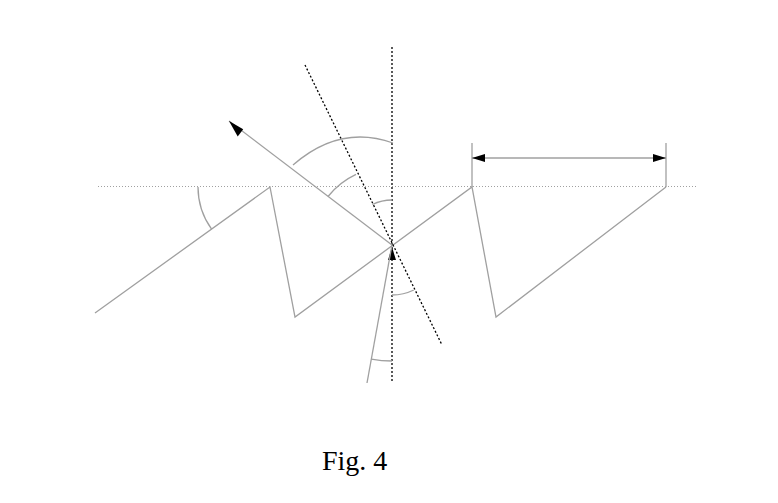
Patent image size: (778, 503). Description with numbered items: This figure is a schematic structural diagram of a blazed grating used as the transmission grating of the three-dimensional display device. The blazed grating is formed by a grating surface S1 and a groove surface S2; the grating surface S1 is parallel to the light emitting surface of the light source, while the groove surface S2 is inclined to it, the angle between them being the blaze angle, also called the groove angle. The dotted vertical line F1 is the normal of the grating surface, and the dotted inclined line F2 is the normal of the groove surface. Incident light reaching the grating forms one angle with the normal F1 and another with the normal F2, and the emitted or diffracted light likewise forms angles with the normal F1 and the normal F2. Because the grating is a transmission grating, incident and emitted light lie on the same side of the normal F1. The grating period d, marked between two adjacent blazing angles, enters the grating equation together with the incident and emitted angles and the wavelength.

The grating surface S1 is at (378, 190).
The groove surface S2 is at (354, 258).
The normal of the grating surface F1 is at (397, 196).
The normal of the groove surface F2 is at (352, 184).
The grating period d is at (569, 158).